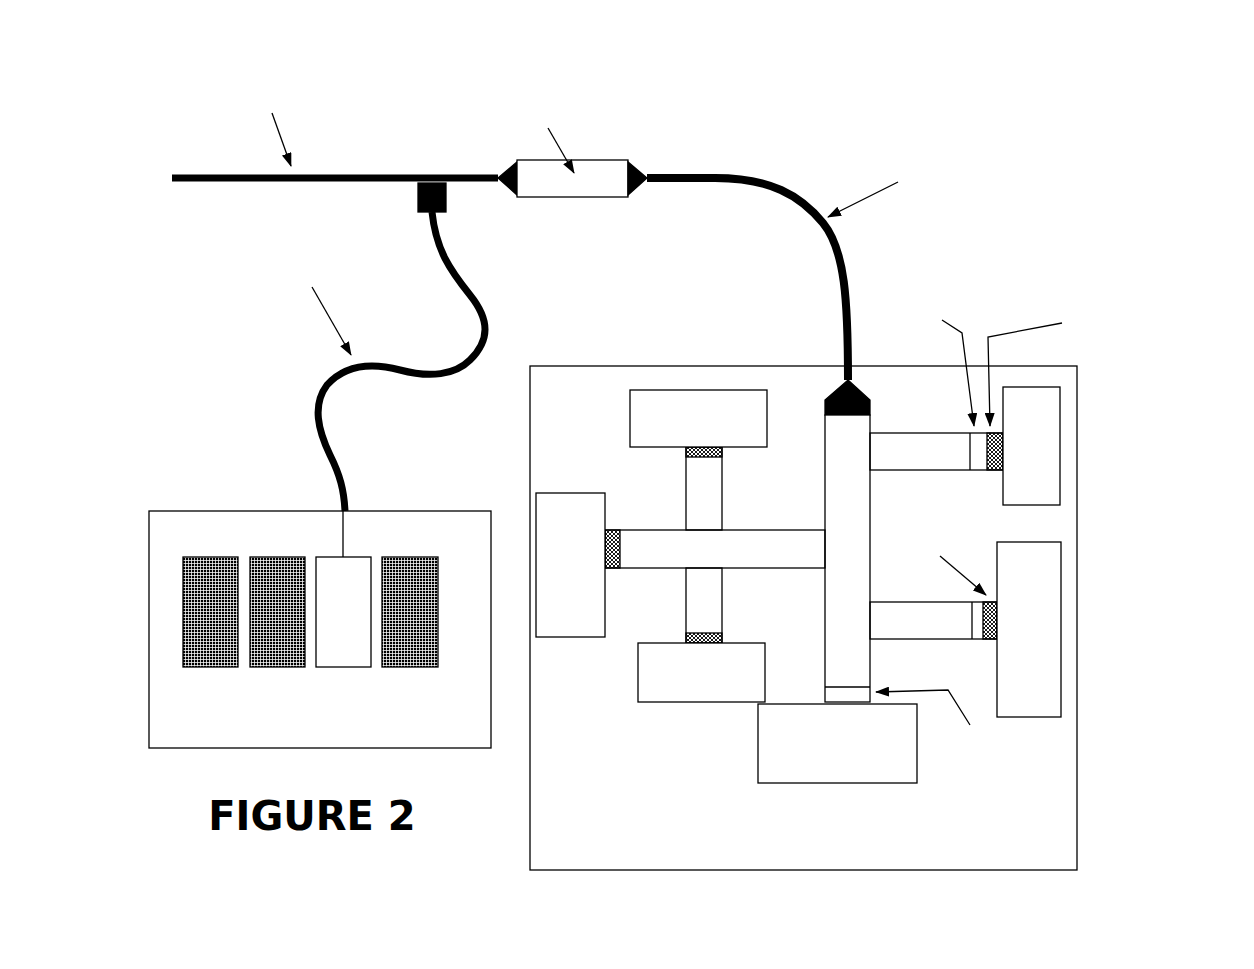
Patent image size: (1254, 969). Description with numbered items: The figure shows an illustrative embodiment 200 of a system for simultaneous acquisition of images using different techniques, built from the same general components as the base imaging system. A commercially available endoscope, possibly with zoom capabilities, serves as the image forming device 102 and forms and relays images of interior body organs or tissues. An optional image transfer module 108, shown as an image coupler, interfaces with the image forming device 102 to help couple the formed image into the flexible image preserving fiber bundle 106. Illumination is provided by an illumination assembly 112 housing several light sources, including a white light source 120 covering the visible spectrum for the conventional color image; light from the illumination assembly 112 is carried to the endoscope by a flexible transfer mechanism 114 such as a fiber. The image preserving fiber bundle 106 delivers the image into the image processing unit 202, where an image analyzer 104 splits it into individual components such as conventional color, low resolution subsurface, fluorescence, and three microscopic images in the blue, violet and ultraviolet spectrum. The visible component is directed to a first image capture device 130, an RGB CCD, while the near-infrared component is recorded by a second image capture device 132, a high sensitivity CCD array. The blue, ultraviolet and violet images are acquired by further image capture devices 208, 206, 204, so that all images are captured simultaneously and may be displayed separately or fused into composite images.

The illustrative embodiment 200 is at (1156, 125).
The image forming device 102 is at (331, 178).
The image transfer module 108 is at (571, 197).
The image preserving fiber bundle 106 is at (766, 182).
The transfer mechanism 114 is at (428, 382).
The illumination assembly 112 is at (208, 518).
The white light source 120 is at (358, 557).
The image processing unit 202 is at (1077, 541).
The image analyzer 104 is at (825, 472).
The first image capture device 130 is at (1045, 398).
The image capture device 208 is at (640, 406).
The image capture device 206 is at (570, 638).
The image capture device 204 is at (640, 702).
The second image capture device 132 is at (758, 742).